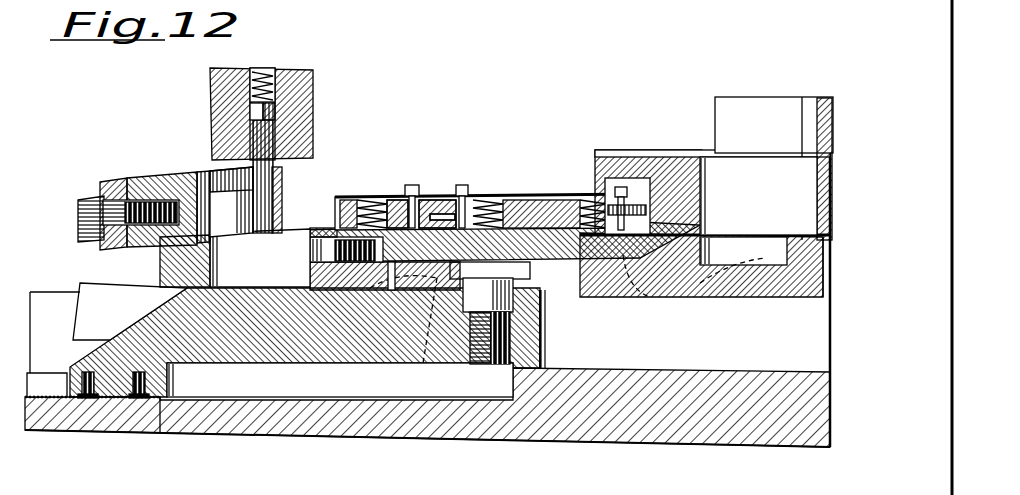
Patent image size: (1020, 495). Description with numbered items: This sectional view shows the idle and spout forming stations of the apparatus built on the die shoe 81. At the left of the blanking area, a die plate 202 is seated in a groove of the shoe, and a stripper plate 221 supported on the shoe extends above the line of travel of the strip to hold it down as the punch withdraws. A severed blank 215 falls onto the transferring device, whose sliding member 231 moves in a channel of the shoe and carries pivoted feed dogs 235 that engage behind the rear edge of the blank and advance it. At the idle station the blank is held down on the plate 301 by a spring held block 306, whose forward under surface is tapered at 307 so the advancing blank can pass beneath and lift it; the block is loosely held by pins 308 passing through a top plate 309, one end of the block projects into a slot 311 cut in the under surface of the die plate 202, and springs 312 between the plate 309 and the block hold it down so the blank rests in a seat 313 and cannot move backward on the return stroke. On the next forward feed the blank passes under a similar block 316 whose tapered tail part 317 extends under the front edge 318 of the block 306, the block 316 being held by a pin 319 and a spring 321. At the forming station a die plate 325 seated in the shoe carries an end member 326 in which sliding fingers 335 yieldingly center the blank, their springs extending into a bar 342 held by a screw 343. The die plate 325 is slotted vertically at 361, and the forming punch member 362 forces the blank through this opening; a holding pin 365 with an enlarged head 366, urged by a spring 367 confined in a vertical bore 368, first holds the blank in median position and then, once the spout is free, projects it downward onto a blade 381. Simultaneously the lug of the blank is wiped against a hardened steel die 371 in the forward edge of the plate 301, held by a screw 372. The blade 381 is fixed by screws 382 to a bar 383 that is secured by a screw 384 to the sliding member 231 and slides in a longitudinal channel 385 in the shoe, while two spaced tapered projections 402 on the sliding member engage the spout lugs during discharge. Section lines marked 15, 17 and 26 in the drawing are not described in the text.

The section line 15 is at (775, 22).
The section line 17 is at (522, 3).
The section line 26 is at (392, 13).
The die shoe 81 is at (568, 445).
The die plate 202 is at (678, 172).
The blank 215 is at (768, 234).
The stripper plate 221 is at (822, 102).
The sliding member 231 is at (806, 298).
The feed dogs 235 is at (700, 316).
The plate 301 is at (627, 280).
The spring held block 306 is at (556, 222).
The tapered under surface 307 is at (641, 203).
The pins 308 is at (468, 190).
The top plate 309 is at (428, 202).
The slot 311 is at (603, 160).
The springs 312 is at (590, 212).
The seat 313 is at (500, 212).
The block 316 is at (398, 198).
The tail part 317 is at (466, 200).
The front edge 318 is at (444, 216).
The pin 319 is at (413, 184).
The spring 321 is at (370, 204).
The die plate 325 is at (168, 260).
The end member 326 is at (156, 172).
The sliding fingers 335 is at (212, 178).
The bar 342 is at (112, 182).
The screw 343 is at (88, 210).
The slot 361 is at (260, 258).
The forming punch member 362 is at (313, 82).
The holding pin 365 is at (275, 130).
The enlarged head 366 is at (266, 110).
The spring 367 is at (263, 70).
The vertical bore 368 is at (300, 78).
The hardened steel die 371 is at (333, 228).
The screw 372 is at (314, 268).
The blade 381 is at (42, 395).
The screws 382 is at (146, 383).
The bar 383 is at (276, 352).
The screw 384 is at (483, 366).
The longitudinal channel 385 is at (240, 400).
The projections 402 is at (108, 328).